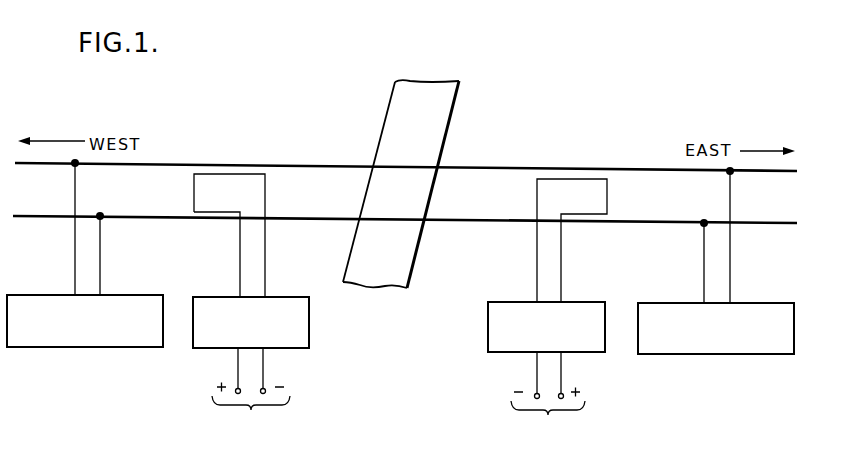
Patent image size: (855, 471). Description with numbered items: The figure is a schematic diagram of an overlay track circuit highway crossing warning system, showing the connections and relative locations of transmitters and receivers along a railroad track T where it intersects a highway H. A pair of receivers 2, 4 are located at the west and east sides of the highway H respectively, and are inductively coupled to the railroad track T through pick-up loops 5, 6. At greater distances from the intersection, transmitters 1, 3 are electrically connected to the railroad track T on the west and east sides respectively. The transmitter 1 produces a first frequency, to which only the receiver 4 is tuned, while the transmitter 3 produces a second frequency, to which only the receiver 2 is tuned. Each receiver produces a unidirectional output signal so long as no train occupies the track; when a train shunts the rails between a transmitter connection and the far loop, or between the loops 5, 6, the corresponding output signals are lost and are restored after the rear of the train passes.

The transmitter 1 is at (115, 295).
The receiver 2 is at (268, 297).
The transmitter 3 is at (750, 303).
The receiver 4 is at (575, 302).
The pick-up loop 5 is at (265, 198).
The pick-up loop 6 is at (536, 199).
The highway H is at (449, 125).
The railroad track T is at (742, 172).